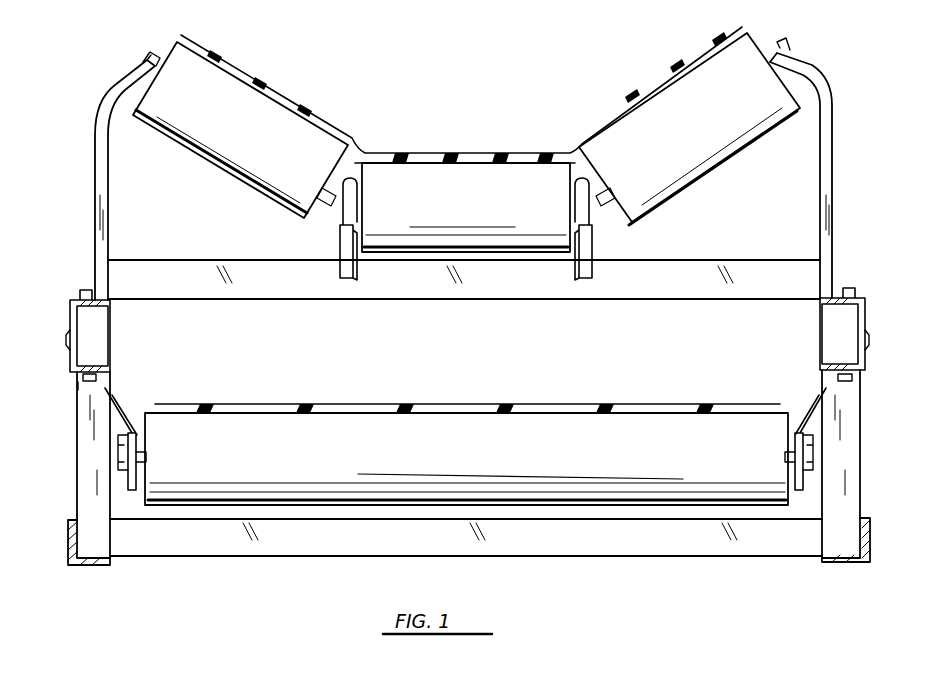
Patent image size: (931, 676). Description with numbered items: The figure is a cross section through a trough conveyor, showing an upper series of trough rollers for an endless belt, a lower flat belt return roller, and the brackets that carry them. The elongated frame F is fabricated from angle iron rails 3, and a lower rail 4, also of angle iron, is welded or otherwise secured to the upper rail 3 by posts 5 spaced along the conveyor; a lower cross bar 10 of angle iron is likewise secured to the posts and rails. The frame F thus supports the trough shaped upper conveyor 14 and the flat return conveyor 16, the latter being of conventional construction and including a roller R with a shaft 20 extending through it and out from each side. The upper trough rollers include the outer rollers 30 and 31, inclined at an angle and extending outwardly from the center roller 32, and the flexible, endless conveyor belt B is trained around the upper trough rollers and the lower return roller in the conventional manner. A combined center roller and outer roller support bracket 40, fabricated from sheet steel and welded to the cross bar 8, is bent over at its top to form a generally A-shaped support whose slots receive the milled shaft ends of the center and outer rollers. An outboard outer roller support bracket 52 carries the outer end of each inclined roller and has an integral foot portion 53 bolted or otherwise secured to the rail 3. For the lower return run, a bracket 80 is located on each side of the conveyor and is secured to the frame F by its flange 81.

The lower cross bar 10 is at (425, 547).
The cross bar 8 is at (463, 288).
The outboard outer roller support bracket 52 is at (95, 165).
The shaft 20 is at (150, 58).
The foot portion 53 is at (80, 297).
The angle iron rail 3 is at (68, 343).
The flange 81 is at (80, 375).
The frame F is at (78, 384).
The post 5 is at (76, 484).
The lower rail 4 is at (100, 558).
The bracket 80 is at (132, 485).
The flat return conveyor 16 is at (466, 425).
The roller R is at (480, 452).
The trough shaped upper conveyor 14 is at (466, 153).
The outer roller 31 is at (240, 163).
The outer roller 30 is at (712, 165).
The center roller 32 is at (495, 212).
The conveyor belt B is at (413, 153).
The combined center roller and outer roller support bracket 40 is at (340, 250).